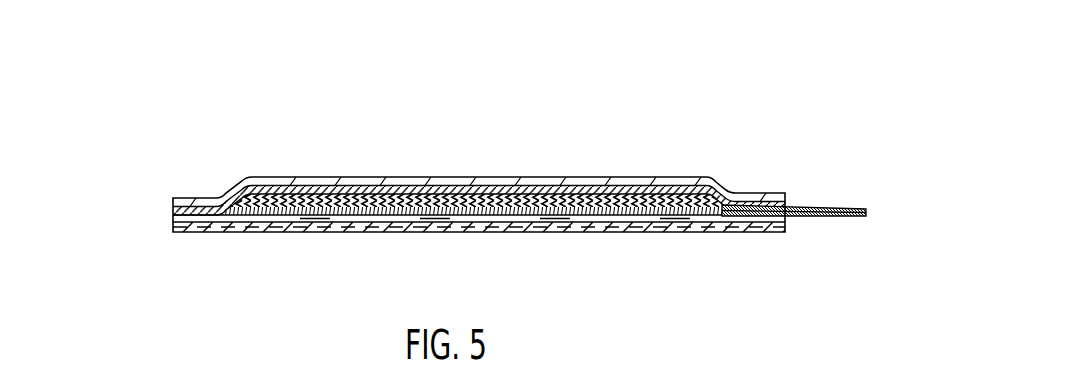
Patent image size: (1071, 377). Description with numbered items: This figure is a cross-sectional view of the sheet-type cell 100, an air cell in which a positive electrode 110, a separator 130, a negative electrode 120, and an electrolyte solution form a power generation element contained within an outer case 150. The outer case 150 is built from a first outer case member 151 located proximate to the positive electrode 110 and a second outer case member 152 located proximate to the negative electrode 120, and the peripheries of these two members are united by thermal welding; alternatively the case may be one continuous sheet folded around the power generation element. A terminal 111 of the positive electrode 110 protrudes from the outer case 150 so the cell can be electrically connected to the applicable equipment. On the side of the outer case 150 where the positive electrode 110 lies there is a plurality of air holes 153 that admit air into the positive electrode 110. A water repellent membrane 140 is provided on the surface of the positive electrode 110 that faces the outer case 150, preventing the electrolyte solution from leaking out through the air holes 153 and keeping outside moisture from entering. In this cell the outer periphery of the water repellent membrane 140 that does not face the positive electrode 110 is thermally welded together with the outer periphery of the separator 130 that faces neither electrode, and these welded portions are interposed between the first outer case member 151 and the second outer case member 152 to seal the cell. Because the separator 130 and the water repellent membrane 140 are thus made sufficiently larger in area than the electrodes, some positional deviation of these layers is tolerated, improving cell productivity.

The sheet-type cell 100 is at (284, 75).
The positive electrode 110 is at (564, 178).
The terminal 111 is at (820, 207).
The negative electrode 120 is at (548, 224).
The separator 130 is at (304, 222).
The water repellent membrane 140 is at (392, 177).
The outer case 150 is at (421, 233).
The first outer case member 151 is at (176, 203).
The second outer case member 152 is at (448, 237).
The air holes 153 is at (487, 185).